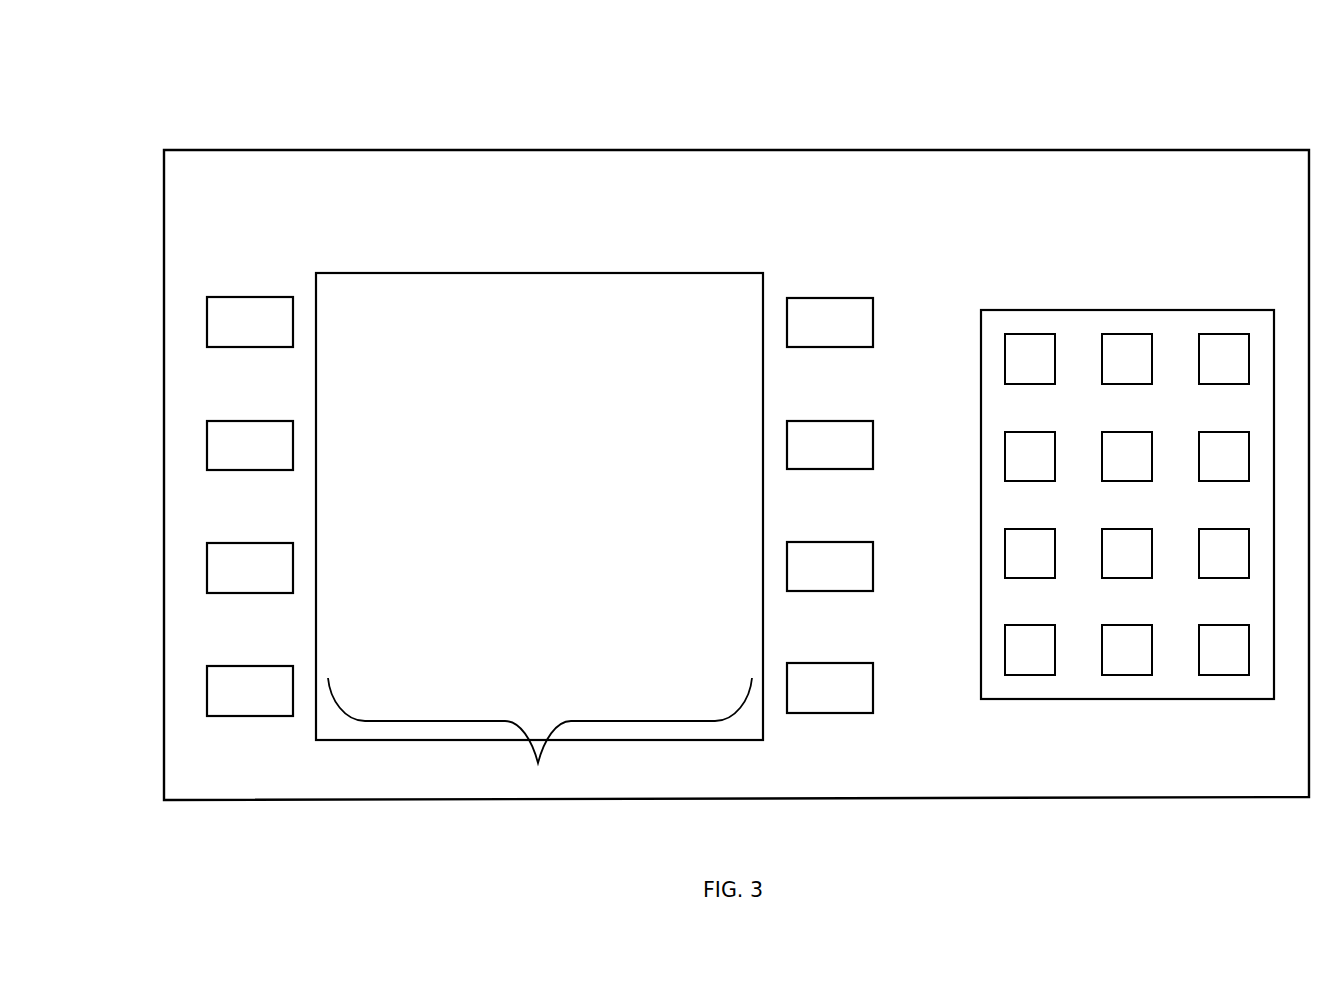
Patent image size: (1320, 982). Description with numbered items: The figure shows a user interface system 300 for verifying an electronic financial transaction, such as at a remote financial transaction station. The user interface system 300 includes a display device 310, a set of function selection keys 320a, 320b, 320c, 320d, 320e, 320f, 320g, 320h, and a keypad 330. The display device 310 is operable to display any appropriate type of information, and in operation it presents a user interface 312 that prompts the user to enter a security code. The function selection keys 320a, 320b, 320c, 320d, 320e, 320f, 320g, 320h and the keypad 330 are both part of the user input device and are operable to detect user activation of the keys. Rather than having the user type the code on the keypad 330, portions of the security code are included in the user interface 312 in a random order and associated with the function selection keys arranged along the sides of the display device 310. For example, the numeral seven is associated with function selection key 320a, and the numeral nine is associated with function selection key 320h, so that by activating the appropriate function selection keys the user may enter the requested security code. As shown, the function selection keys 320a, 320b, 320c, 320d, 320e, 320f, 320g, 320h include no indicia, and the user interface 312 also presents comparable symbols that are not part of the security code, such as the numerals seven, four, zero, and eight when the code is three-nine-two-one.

The user interface system 300 is at (1116, 97).
The display device 310 is at (538, 273).
The user interface 312 is at (540, 735).
The function selection key 320a is at (207, 322).
The function selection key 320b is at (207, 442).
The function selection key 320c is at (207, 568).
The function selection key 320d is at (207, 692).
The function selection key 320e is at (873, 322).
The function selection key 320f is at (873, 443).
The function selection key 320g is at (873, 565).
The function selection key 320h is at (873, 688).
The keypad 330 is at (1126, 310).